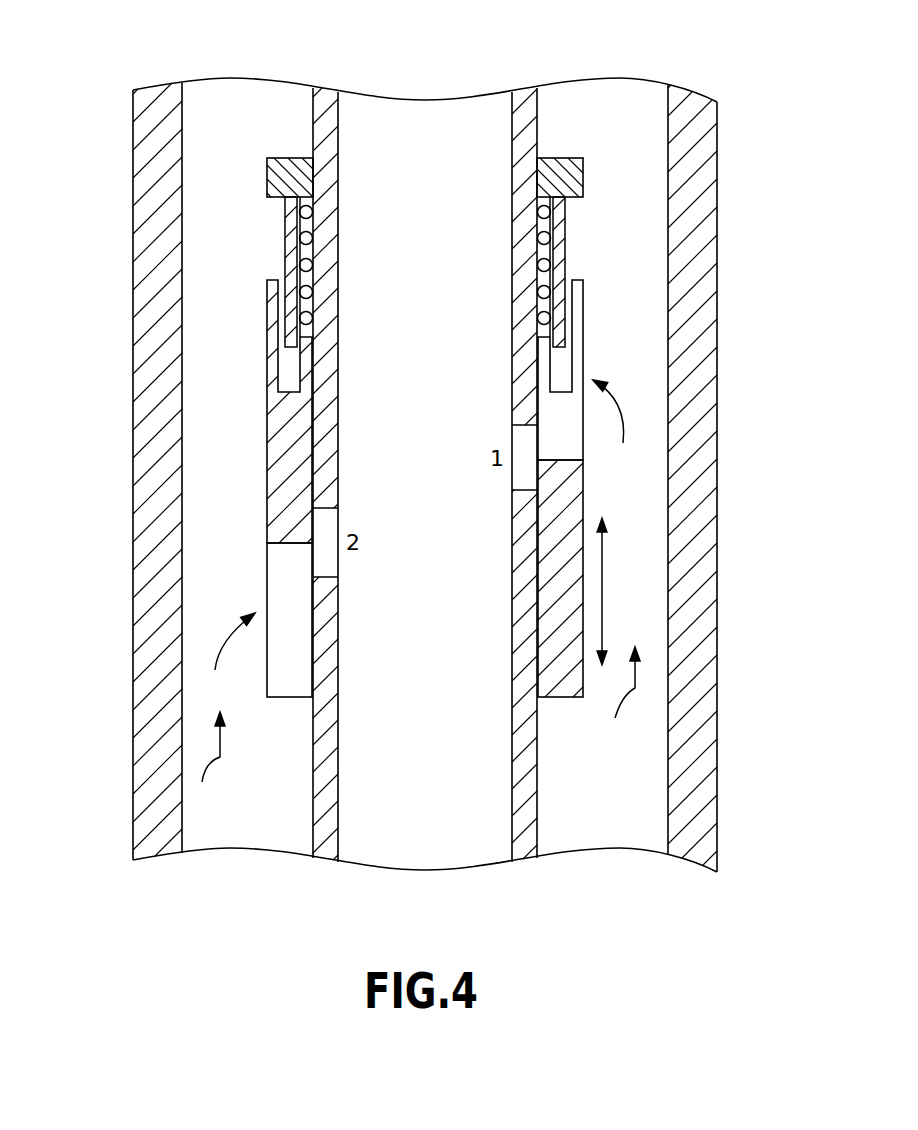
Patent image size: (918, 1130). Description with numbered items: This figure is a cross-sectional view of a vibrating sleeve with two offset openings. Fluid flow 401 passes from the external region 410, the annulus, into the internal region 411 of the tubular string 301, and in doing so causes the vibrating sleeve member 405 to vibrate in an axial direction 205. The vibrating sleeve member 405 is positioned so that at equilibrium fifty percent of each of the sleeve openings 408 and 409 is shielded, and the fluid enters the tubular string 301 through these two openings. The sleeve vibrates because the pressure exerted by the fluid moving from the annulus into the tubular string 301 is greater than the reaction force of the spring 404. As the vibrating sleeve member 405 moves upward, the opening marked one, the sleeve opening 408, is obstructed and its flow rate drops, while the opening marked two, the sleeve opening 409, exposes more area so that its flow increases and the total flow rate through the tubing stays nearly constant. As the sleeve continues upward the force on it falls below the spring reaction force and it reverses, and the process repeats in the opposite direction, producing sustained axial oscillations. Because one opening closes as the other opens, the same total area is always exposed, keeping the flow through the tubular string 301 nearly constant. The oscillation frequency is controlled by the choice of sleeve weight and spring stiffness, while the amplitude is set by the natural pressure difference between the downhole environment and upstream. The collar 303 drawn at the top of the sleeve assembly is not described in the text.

The axial direction 205 is at (603, 592).
The tubular string 301 is at (525, 138).
The stop collar 303 is at (280, 157).
The fluid flow 401 is at (415, 596).
The spring 404 is at (547, 267).
The vibrating sleeve member 405 is at (267, 460).
The sleeve opening 408 is at (522, 457).
The sleeve opening 409 is at (325, 552).
The external region 410 is at (601, 832).
The internal region 411 is at (420, 738).